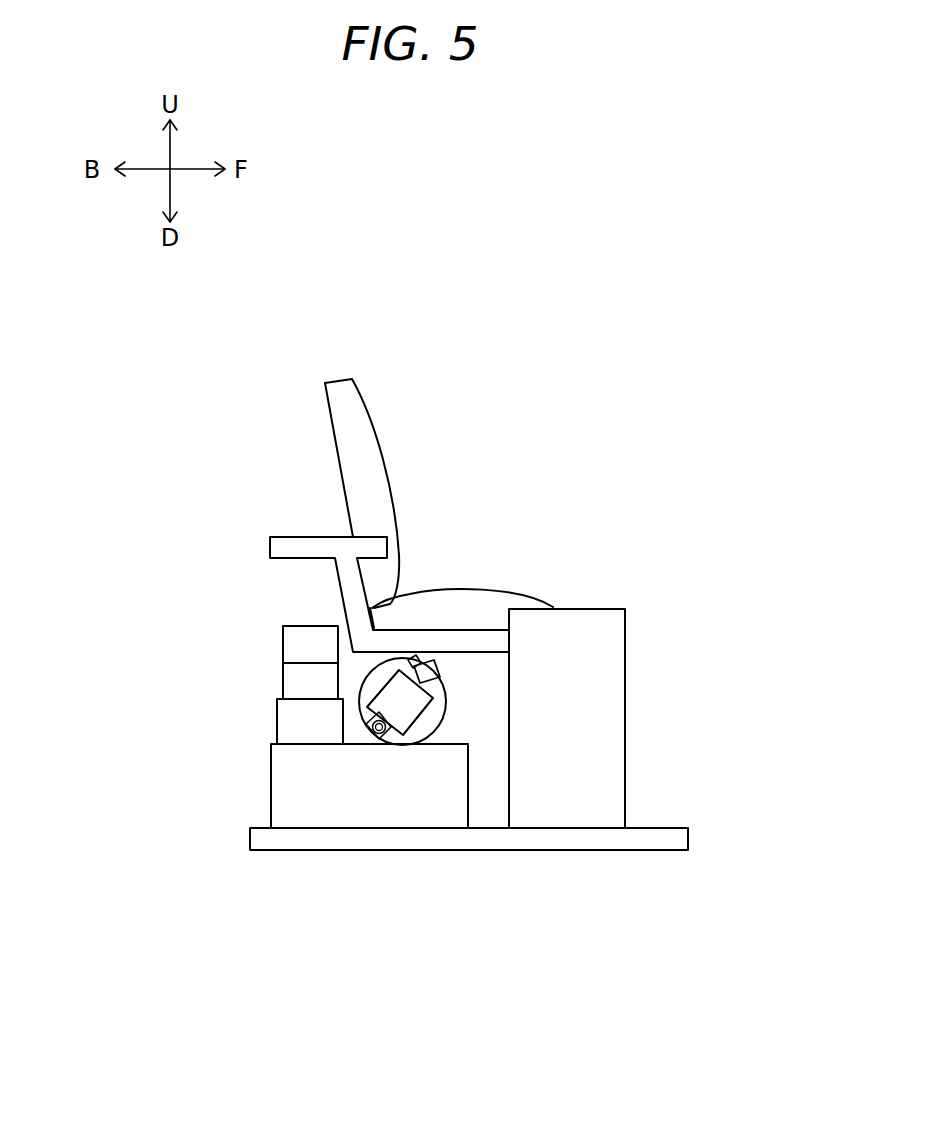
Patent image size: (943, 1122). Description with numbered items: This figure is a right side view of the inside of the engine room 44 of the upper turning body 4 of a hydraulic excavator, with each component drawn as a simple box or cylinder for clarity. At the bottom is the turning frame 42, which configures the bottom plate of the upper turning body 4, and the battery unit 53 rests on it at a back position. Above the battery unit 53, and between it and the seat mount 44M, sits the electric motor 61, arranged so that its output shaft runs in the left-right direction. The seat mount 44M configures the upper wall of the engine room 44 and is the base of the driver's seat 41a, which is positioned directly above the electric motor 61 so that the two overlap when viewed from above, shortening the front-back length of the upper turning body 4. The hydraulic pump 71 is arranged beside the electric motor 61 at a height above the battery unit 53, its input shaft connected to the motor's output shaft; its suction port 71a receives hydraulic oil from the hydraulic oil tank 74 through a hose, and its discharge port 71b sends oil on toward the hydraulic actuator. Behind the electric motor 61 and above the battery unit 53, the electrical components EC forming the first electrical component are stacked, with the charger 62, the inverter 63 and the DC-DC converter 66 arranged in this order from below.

The upper turning body 4 is at (698, 388).
The driver's seat 41a is at (375, 504).
The turning frame 42 is at (602, 840).
The engine room 44 is at (167, 537).
The seat mount 44M is at (303, 547).
The battery unit 53 is at (316, 807).
The electric motor 61 is at (427, 720).
The charger 62 is at (300, 725).
The inverter 63 is at (300, 687).
The DC-DC converter 66 is at (300, 647).
The hydraulic pump 71 is at (436, 820).
The suction port 71a is at (376, 740).
The discharge port 71b is at (417, 657).
The hydraulic oil tank 74 is at (590, 742).
The electrical components EC is at (178, 625).